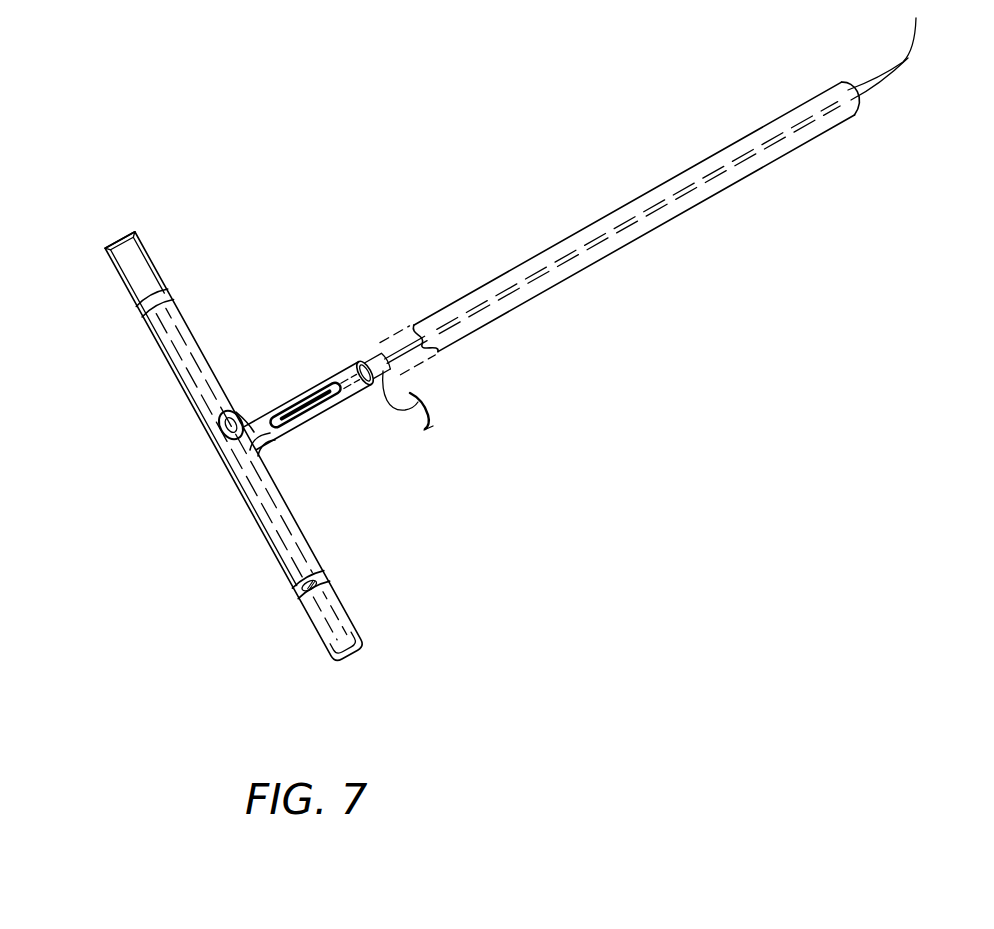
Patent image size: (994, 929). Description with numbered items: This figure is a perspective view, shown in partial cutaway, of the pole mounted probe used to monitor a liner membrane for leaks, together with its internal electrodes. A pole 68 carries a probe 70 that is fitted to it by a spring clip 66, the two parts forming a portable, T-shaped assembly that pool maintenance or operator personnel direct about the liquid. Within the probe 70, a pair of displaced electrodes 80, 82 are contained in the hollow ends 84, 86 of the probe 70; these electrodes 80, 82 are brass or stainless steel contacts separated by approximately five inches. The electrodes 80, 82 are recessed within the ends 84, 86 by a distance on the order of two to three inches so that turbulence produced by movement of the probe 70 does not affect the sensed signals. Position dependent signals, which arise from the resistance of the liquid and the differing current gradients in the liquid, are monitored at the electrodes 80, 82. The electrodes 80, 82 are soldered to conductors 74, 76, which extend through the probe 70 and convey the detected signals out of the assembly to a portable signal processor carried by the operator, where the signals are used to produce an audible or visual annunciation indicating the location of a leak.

The spring clip 66 is at (434, 426).
The pole 68 is at (584, 221).
The probe 70 is at (250, 521).
The conductor 74 is at (241, 422).
The conductor 76 is at (244, 453).
The electrode 80 is at (140, 305).
The electrode 82 is at (327, 585).
The hollow end 84 is at (126, 242).
The hollow end 86 is at (362, 656).